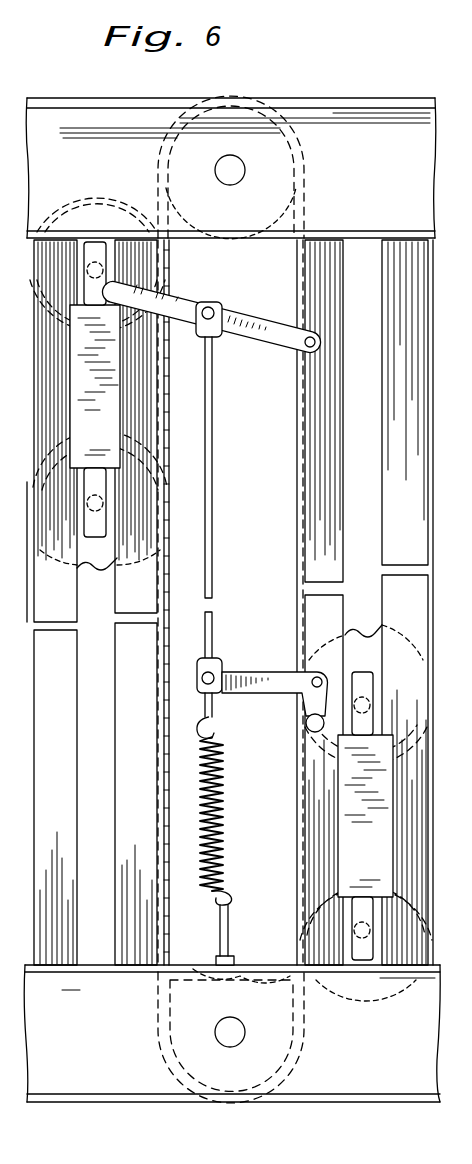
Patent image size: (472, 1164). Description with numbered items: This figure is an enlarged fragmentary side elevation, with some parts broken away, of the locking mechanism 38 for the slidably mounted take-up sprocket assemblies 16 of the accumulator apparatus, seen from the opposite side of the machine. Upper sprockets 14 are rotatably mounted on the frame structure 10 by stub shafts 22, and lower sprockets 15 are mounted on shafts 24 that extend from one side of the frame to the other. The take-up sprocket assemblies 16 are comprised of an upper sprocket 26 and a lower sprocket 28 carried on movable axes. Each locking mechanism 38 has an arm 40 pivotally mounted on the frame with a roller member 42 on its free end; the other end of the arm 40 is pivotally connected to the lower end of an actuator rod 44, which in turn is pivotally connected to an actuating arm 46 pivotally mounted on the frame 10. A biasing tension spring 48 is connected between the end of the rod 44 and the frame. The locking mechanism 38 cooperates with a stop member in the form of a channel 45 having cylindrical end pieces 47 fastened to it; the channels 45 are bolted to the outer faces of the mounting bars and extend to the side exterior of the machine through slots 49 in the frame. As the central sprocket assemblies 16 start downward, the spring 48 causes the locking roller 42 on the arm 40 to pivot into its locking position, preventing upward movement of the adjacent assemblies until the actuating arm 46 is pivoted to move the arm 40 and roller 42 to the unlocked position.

The frame structure 10 is at (334, 85).
The upper sprockets 14 is at (258, 198).
The lower sprockets 15 is at (242, 955).
The take-up sprocket assemblies 16 is at (141, 410).
The stub shafts 22 is at (237, 173).
The shafts 24 is at (235, 1042).
The upper sprocket 26 is at (303, 613).
The lower sprocket 28 is at (103, 565).
The locking mechanism 38 is at (267, 478).
The arm 40 is at (235, 672).
The roller member 42 is at (307, 722).
The actuator rod 44 is at (212, 582).
The channel 45 is at (100, 381).
The actuating arm 46 is at (246, 315).
The cylindrical end pieces 47 is at (102, 288).
The biasing tension spring 48 is at (222, 803).
The slots 49 is at (354, 409).